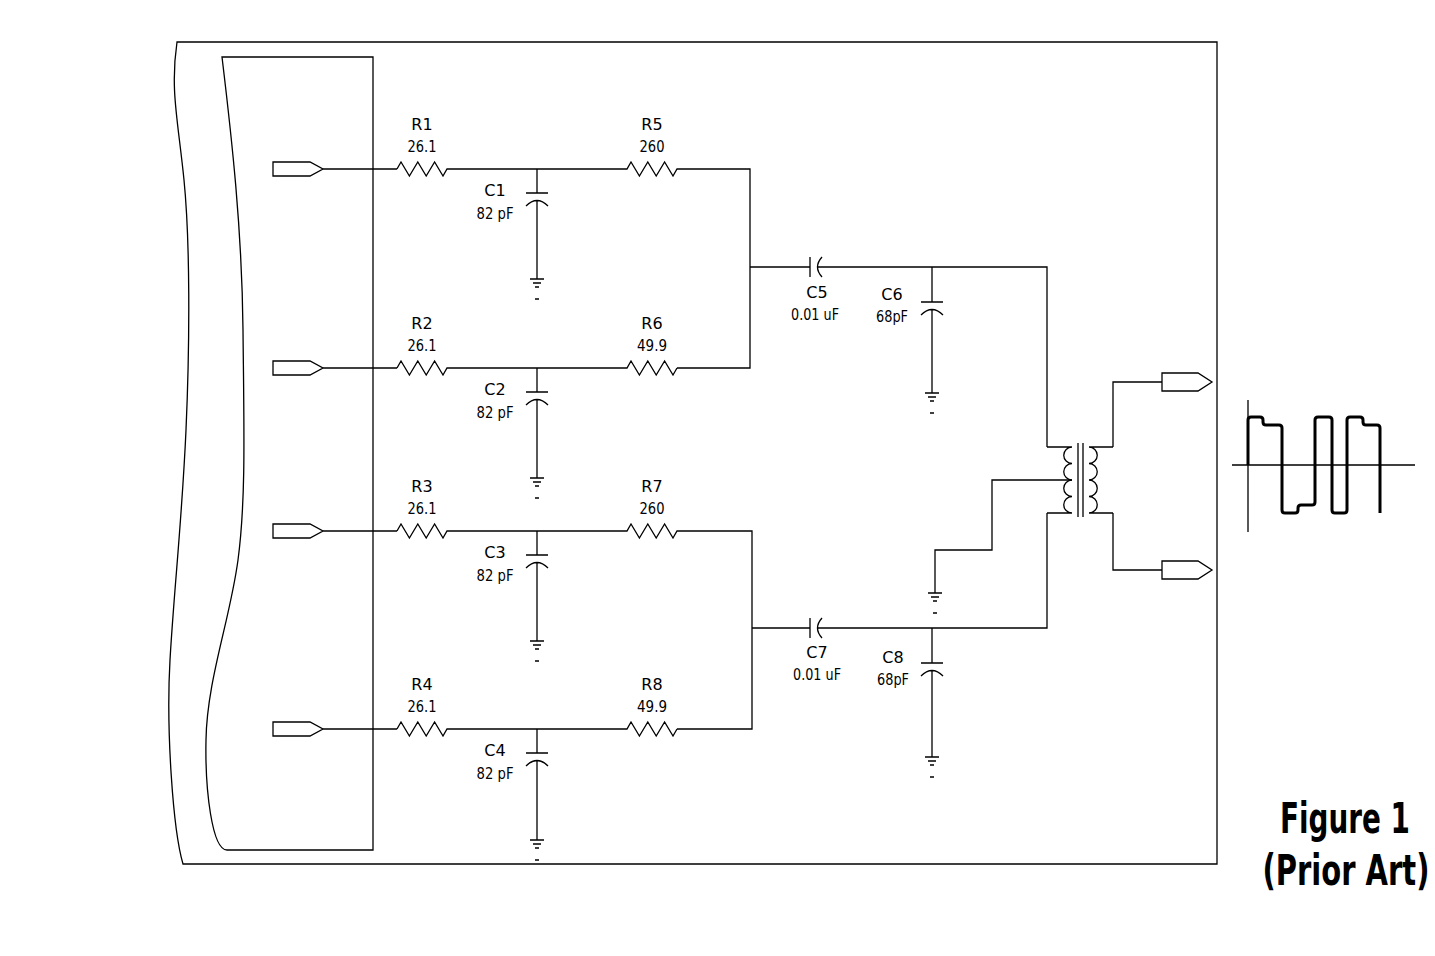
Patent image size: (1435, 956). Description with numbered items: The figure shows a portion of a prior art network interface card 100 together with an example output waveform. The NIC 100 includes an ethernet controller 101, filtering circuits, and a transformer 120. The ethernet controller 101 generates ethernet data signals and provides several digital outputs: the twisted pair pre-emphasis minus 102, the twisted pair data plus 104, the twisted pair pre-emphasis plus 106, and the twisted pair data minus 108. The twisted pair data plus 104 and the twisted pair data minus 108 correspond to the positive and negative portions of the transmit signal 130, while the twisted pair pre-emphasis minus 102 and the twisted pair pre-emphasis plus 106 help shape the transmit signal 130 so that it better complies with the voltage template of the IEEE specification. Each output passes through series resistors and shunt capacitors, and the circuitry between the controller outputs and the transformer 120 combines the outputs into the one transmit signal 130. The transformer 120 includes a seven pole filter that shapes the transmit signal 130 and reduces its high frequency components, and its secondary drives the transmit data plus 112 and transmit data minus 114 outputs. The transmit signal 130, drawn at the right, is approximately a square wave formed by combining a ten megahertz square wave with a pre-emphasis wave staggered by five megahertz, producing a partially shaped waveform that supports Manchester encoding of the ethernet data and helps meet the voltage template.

The network interface card 100 is at (693, 453).
The ethernet controller 101 is at (289, 453).
The twisted pair pre-emphasis minus 102 is at (326, 126).
The twisted pair data plus 104 is at (327, 336).
The twisted pair pre-emphasis plus 106 is at (326, 488).
The twisted pair data minus 108 is at (327, 697).
The transmit data plus 112 is at (1245, 401).
The transmit data minus 114 is at (1246, 567).
The transformer 120 is at (984, 516).
The transmit signal 130 is at (1323, 480).